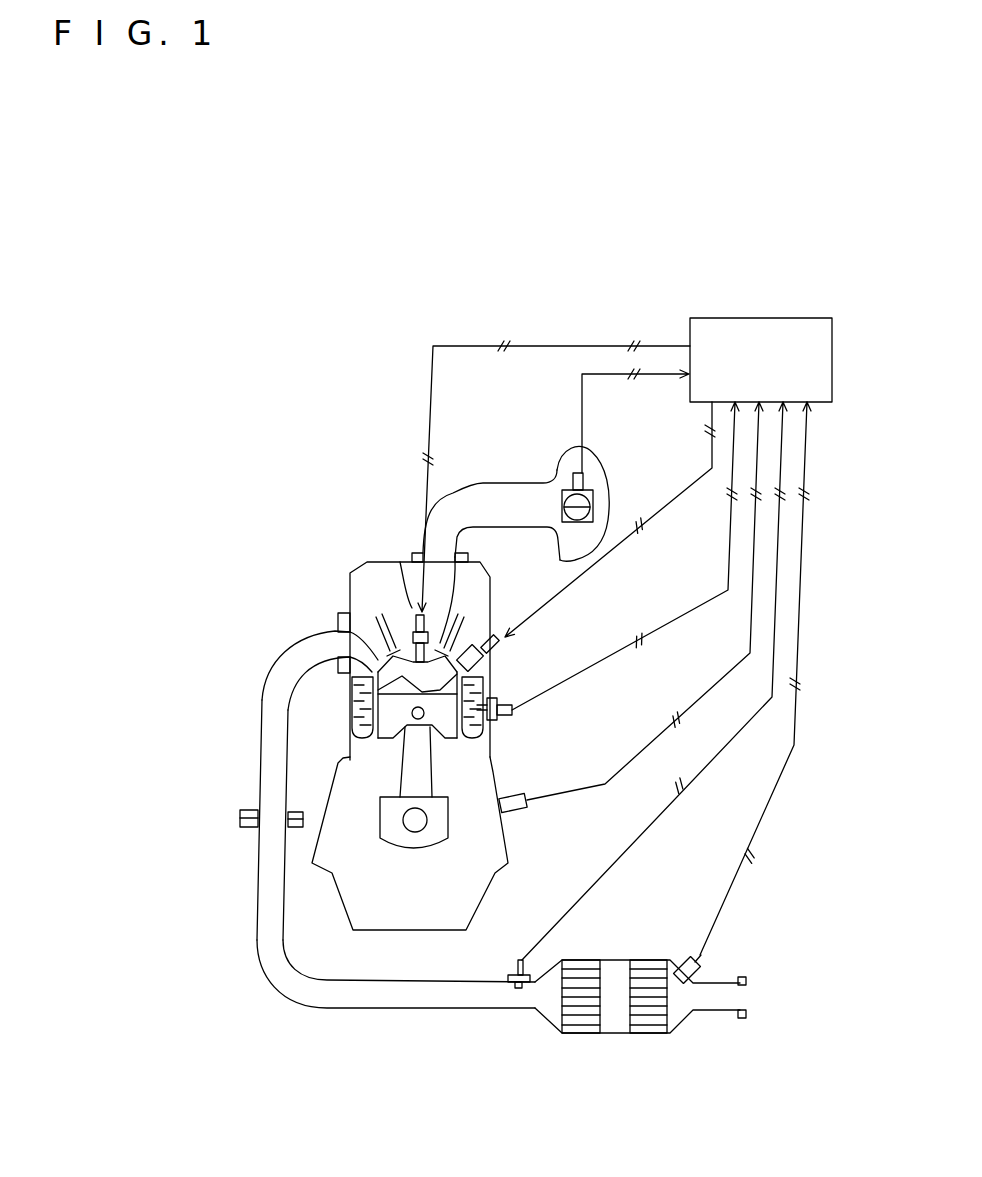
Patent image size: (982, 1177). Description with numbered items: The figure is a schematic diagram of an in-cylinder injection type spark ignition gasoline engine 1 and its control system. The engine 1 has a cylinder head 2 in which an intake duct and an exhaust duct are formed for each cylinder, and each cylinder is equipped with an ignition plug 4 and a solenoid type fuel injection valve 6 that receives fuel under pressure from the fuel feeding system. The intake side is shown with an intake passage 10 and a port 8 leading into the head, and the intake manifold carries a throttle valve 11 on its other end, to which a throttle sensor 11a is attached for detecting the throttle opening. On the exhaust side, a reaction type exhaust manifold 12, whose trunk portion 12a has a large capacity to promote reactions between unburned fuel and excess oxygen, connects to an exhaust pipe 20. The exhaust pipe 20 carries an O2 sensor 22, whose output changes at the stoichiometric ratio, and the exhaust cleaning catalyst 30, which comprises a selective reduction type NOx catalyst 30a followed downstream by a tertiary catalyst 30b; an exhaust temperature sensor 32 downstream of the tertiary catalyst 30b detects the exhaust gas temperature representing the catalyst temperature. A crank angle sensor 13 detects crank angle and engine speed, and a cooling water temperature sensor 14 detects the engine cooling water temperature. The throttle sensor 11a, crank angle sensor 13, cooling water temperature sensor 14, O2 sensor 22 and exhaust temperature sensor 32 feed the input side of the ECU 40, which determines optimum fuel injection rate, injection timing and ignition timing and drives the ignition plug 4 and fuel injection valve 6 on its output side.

The gasoline engine 1 is at (350, 550).
The cylinder head 2 is at (350, 590).
The ignition plug 4 is at (412, 610).
The fuel injection valve 6 is at (497, 647).
The intake port flange 8 is at (337, 631).
The intake pipe 10 is at (495, 483).
The throttle valve 11 is at (600, 497).
The throttle sensor 11a is at (587, 477).
The exhaust manifold 12 is at (262, 715).
The pipe bend portion 12a is at (308, 670).
The crank angle sensor 13 is at (520, 812).
The cooling water temperature sensor 14 is at (512, 716).
The exhaust pipe 20 is at (257, 945).
The O2 sensor 22 is at (517, 975).
The exhaust cleaning catalyst 30 is at (650, 944).
The selective reduction type NOx catalyst 30a is at (580, 1033).
The tertiary catalyst 30b is at (645, 1033).
The exhaust temperature sensor 32 is at (712, 960).
The ECU 40 is at (776, 318).